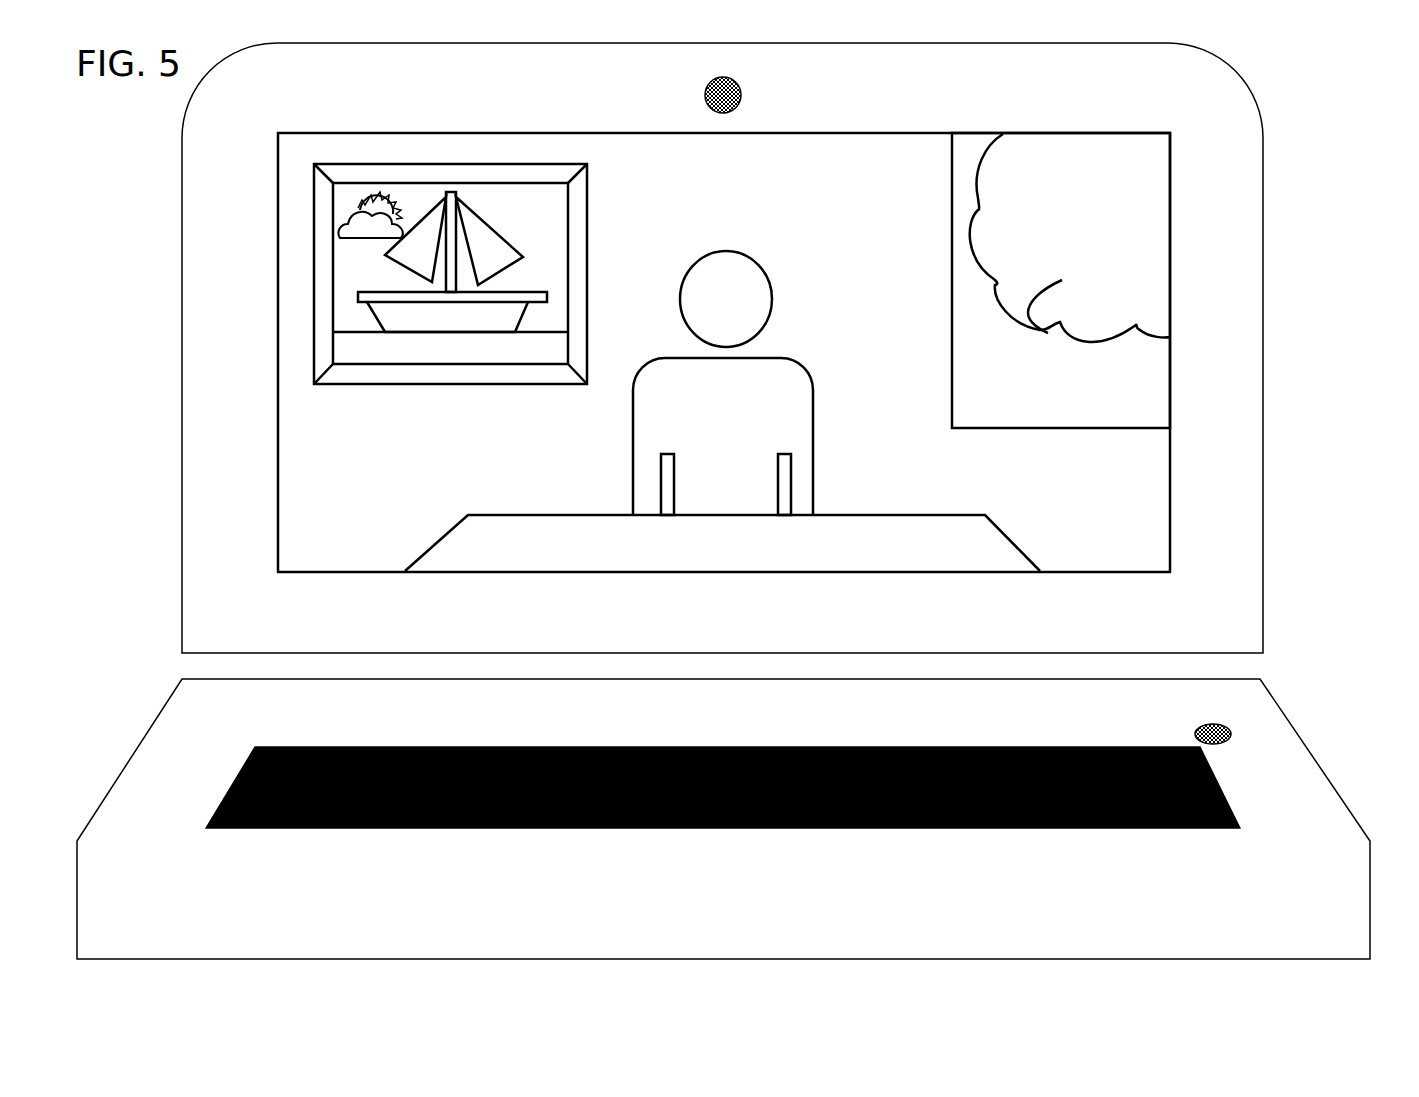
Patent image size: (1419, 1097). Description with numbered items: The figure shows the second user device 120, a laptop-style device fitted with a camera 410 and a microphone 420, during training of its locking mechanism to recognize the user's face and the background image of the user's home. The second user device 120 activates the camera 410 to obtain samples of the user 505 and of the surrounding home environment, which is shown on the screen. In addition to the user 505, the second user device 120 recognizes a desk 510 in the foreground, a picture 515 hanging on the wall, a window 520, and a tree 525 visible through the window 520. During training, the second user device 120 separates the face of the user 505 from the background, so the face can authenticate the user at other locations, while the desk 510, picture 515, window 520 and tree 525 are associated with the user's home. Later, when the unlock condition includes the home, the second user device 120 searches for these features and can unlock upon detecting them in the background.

The second user device 120 is at (1263, 242).
The camera 410 is at (741, 95).
The microphone 420 is at (1231, 734).
The user 505 is at (722, 352).
The desk 510 is at (438, 545).
The picture 515 is at (314, 263).
The window 520 is at (950, 278).
The tree 525 is at (1048, 333).